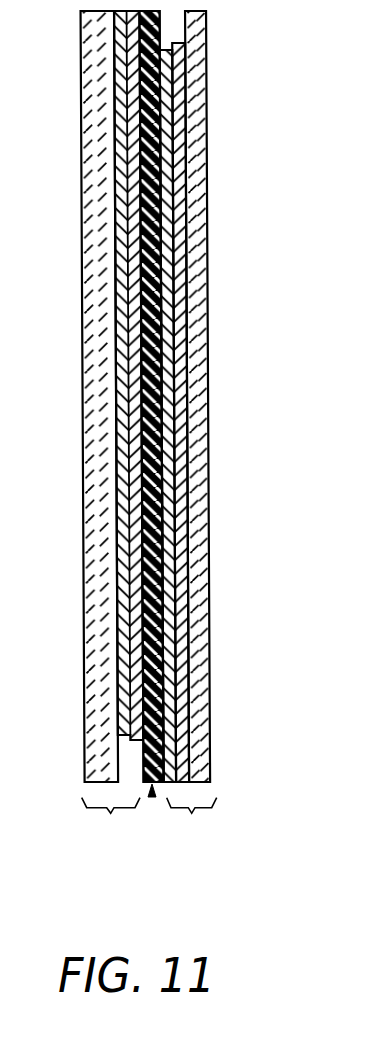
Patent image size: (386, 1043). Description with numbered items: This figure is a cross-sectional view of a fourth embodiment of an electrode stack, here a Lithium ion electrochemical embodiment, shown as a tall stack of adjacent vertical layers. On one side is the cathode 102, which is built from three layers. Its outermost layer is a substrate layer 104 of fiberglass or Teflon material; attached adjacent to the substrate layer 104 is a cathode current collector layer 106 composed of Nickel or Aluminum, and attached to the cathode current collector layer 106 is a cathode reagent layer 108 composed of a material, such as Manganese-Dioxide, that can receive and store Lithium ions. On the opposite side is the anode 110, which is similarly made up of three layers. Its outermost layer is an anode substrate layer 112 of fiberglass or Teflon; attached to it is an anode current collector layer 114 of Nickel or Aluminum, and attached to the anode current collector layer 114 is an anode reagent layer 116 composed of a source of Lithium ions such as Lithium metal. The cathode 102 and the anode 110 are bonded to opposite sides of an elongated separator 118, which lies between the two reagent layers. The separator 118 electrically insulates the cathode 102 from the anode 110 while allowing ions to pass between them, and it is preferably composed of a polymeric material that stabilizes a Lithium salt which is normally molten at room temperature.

The cathode 102 is at (111, 813).
The substrate layer 104 is at (97, 237).
The cathode current collector layer 106 is at (118, 287).
The cathode reagent layer 108 is at (128, 353).
The anode 110 is at (192, 813).
The anode substrate layer 112 is at (193, 272).
The anode current collector layer 114 is at (178, 345).
The anode reagent layer 116 is at (163, 405).
The separator 118 is at (152, 795).